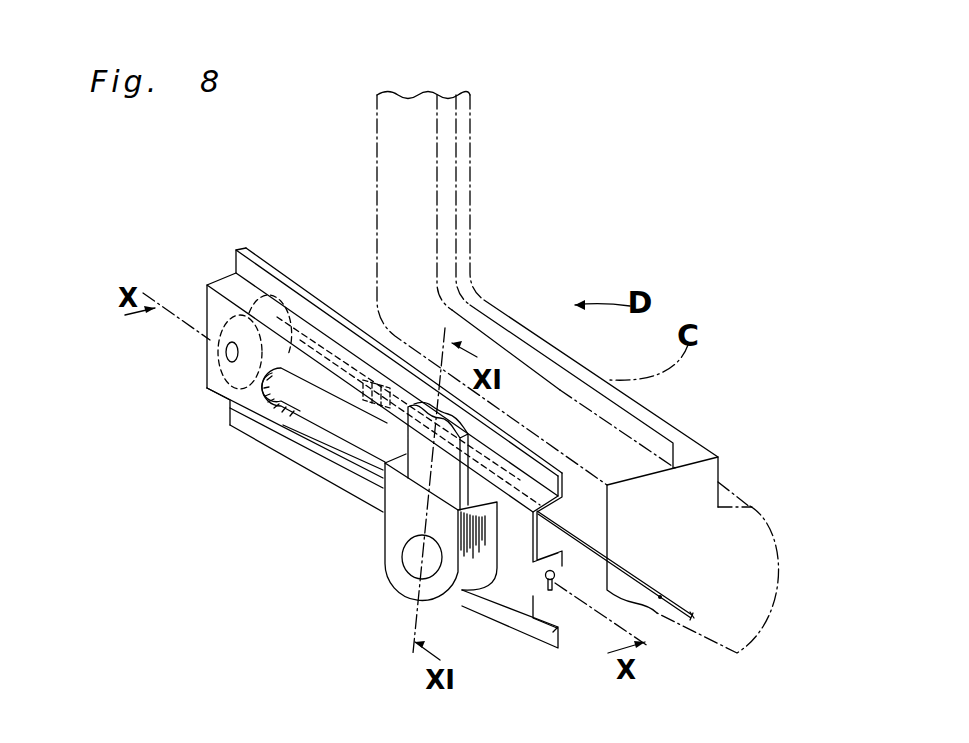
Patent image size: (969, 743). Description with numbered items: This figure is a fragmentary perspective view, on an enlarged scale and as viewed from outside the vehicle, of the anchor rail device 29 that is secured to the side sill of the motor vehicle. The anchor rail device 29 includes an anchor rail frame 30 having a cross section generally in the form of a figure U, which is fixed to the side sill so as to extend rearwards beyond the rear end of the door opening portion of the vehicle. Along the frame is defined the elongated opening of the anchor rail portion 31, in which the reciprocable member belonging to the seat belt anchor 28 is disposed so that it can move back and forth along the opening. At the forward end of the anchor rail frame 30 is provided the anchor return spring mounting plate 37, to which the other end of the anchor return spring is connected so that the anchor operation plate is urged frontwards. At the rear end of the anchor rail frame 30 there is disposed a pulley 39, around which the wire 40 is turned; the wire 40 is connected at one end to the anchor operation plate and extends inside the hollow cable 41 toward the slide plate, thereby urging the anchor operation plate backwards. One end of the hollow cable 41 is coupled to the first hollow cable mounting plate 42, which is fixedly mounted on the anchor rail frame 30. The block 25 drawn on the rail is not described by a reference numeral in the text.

The slide block 25 is at (425, 457).
The seat belt anchor 28 is at (400, 532).
The anchor rail device 29 is at (518, 648).
The anchor rail frame 30 is at (343, 500).
The anchor rail portion 31 is at (292, 462).
The anchor return spring mounting plate 37 is at (557, 588).
The pulley 39 is at (218, 372).
The wire 40 is at (330, 412).
The hollow cable 41 is at (658, 597).
The first hollow cable mounting plate 42 is at (362, 403).